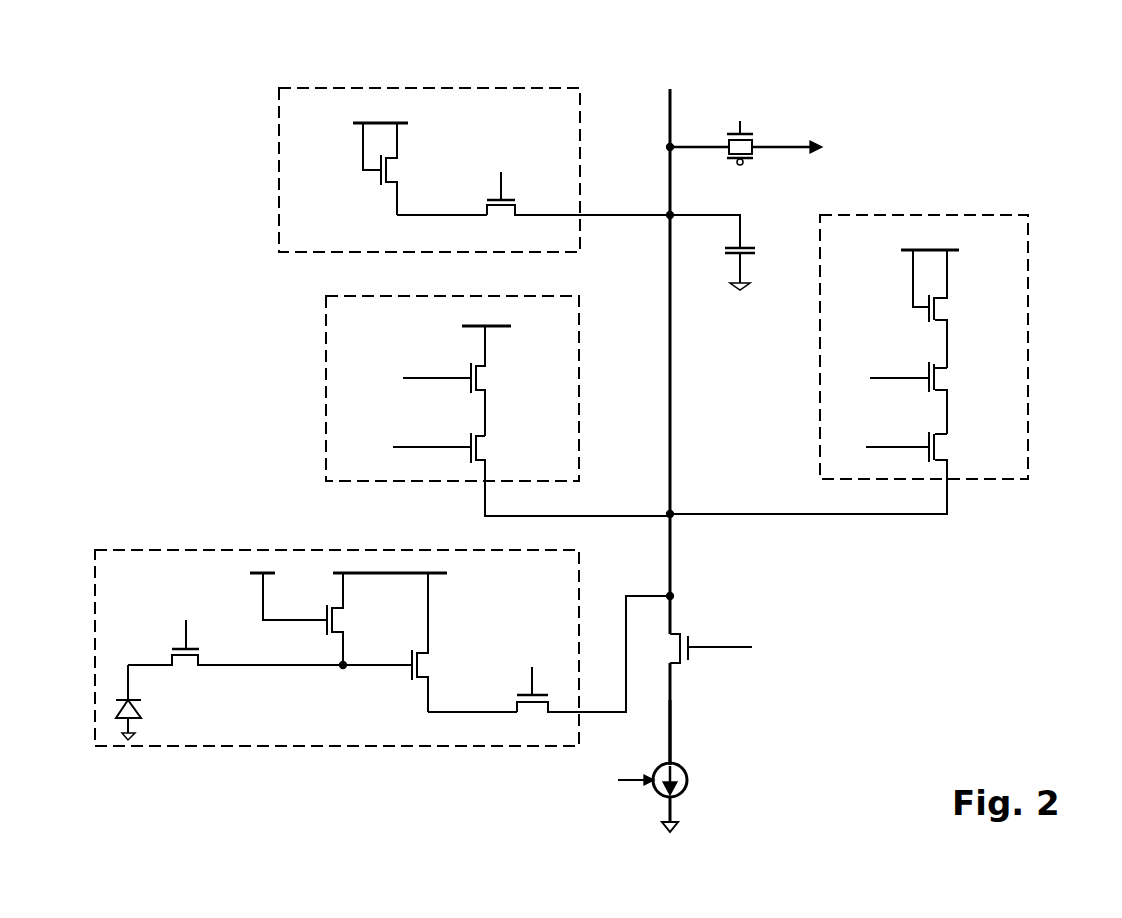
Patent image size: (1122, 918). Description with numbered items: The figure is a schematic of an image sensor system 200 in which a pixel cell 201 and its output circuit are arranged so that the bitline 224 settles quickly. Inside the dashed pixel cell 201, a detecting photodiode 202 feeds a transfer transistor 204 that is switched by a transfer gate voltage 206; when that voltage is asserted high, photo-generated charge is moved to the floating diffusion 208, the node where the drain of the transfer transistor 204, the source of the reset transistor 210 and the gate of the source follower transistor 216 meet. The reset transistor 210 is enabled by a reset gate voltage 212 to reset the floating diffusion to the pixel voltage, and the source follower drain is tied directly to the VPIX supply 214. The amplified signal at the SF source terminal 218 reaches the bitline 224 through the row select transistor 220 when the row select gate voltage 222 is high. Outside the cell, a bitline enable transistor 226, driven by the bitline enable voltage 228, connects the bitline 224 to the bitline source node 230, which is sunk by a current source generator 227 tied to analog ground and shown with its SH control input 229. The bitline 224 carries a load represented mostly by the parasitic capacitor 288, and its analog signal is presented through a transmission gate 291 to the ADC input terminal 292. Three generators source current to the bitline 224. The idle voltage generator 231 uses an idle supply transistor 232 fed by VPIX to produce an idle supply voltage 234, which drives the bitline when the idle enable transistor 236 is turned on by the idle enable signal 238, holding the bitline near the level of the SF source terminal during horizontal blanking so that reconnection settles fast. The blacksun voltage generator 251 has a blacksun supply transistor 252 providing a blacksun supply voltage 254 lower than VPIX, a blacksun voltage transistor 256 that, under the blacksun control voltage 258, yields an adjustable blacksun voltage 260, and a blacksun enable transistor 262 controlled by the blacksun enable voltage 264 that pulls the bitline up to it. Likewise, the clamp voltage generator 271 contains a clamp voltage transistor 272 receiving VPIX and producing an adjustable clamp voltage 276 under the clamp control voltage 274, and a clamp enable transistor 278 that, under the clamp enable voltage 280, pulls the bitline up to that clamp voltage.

The image sensor system 200 is at (1031, 126).
The pixel cell 201 is at (145, 586).
The photodiode 202 is at (152, 712).
The transfer transistor 204 is at (187, 667).
The transfer gate voltage 206 is at (193, 623).
The floating diffusion 208 is at (268, 669).
The reset transistor 210 is at (341, 621).
The reset gate voltage 212 is at (298, 621).
The VPIX connection of source follower drain 214 is at (346, 590).
The source follower transistor 216 is at (429, 667).
The SF source terminal 218 is at (470, 711).
The row select transistor 220 is at (530, 711).
The row select gate voltage 222 is at (539, 669).
The bitline 224 is at (678, 559).
The bitline enable transistor 226 is at (669, 651).
The current source generator 227 is at (697, 783).
The bitline enable voltage 228 is at (741, 644).
The current source control signal 229 is at (633, 788).
The bitline source node 230 is at (668, 731).
The idle voltage generator 231 is at (329, 121).
The idle supply transistor 232 is at (392, 171).
The idle supply voltage 234 is at (434, 214).
The idle enable transistor 236 is at (500, 217).
The idle enable signal 238 is at (521, 175).
The blacksun voltage generator 251 is at (870, 248).
The blacksun supply transistor 252 is at (949, 309).
The blacksun supply voltage 254 is at (949, 346).
The blacksun voltage transistor 256 is at (949, 378).
The blacksun control voltage 258 is at (899, 378).
The adjustable blacksun voltage 260 is at (949, 416).
The blacksun enable transistor 262 is at (949, 448).
The blacksun enable voltage 264 is at (895, 447).
The clamp voltage generator 271 is at (375, 328).
The clamp voltage transistor 272 is at (487, 381).
The clamp control voltage 274 is at (437, 377).
The adjustable clamp voltage 276 is at (489, 416).
The clamp enable transistor 278 is at (487, 451).
The clamp enable voltage 280 is at (429, 447).
The parasitic capacitor 288 is at (751, 242).
The transmission gate 291 is at (745, 126).
The ADC input terminal 292 is at (783, 146).